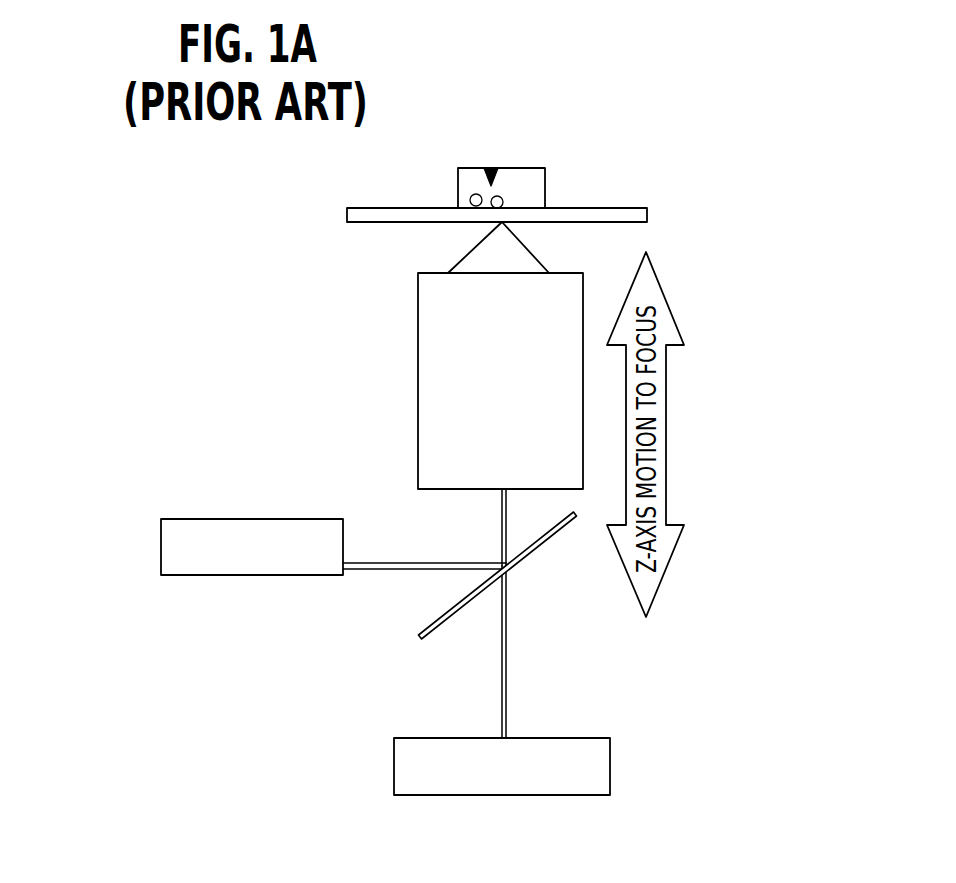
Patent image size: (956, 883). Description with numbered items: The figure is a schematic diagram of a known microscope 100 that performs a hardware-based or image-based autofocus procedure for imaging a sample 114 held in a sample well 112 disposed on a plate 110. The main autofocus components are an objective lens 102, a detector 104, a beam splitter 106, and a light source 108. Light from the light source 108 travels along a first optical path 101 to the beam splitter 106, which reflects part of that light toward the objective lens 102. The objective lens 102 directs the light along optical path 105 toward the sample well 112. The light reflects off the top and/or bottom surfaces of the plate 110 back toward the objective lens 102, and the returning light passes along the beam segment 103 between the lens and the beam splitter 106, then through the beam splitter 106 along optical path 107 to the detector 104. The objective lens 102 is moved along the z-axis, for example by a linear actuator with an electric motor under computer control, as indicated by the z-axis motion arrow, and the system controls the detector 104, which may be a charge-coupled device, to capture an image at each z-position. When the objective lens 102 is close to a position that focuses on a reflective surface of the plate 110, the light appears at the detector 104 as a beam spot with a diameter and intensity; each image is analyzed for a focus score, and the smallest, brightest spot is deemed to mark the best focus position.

The microscope 100 is at (256, 361).
The first optical path 101 is at (357, 572).
The objective lens 102 is at (517, 445).
The light beam between beam splitter and objective lens 103 is at (500, 523).
The detector 104 is at (432, 795).
The optical path 105 is at (476, 246).
The beam splitter 106 is at (545, 582).
The optical path 107 is at (508, 683).
The light source 108 is at (287, 535).
The plate 110 is at (597, 208).
The sample well 112 is at (531, 168).
The sample 114 is at (491, 168).